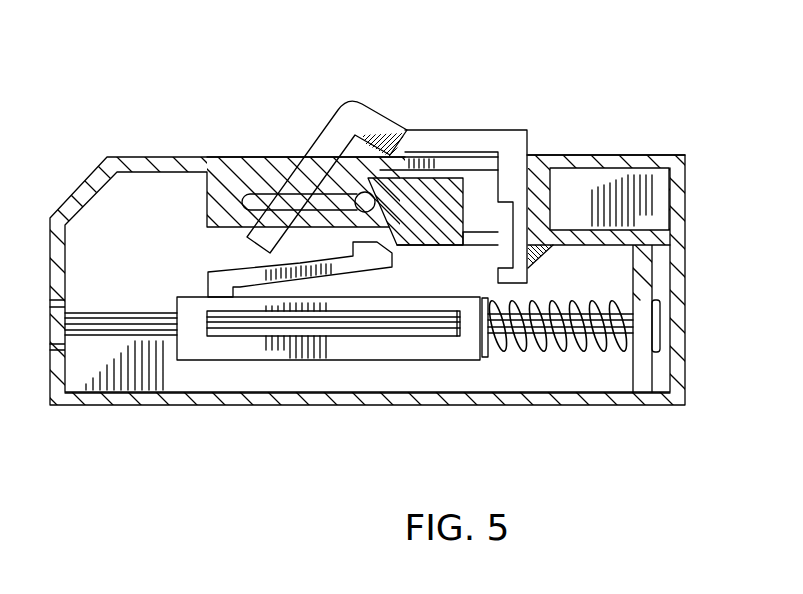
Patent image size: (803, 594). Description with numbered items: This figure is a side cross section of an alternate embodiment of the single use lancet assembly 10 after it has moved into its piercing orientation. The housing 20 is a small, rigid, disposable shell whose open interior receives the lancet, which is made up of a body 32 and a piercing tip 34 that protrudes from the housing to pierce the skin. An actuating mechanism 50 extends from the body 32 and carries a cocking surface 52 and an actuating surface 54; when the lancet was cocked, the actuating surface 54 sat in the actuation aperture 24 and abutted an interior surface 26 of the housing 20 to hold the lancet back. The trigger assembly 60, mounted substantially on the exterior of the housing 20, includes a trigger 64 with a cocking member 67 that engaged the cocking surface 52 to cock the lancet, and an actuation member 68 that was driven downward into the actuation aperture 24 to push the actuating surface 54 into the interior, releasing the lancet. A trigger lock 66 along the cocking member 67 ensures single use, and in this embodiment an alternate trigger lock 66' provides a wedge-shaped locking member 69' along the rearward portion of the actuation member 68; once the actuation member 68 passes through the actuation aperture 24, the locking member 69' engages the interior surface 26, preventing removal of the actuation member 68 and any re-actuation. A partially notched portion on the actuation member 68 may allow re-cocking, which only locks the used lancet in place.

The single use lancet assembly 10 is at (597, 110).
The housing 20 is at (612, 413).
The actuation aperture 24 is at (483, 232).
The interior surface 26 is at (597, 247).
The body 32 is at (302, 362).
The piercing tip 34 is at (137, 322).
The actuating mechanism 50 is at (190, 287).
The cocking surface 52 is at (204, 276).
The actuating surface 54 is at (370, 240).
The trigger assembly 60 is at (410, 76).
The trigger 64 is at (500, 130).
The trigger lock 66 is at (305, 161).
The trigger lock 66' is at (443, 150).
The cocking member 67 is at (323, 127).
The actuation member 68 is at (528, 220).
The locking member 69' is at (571, 340).